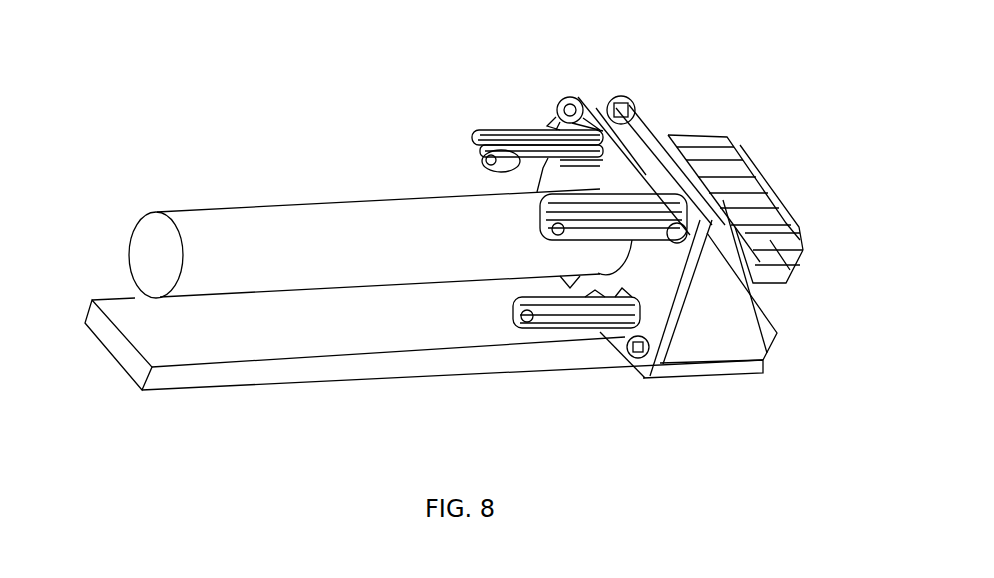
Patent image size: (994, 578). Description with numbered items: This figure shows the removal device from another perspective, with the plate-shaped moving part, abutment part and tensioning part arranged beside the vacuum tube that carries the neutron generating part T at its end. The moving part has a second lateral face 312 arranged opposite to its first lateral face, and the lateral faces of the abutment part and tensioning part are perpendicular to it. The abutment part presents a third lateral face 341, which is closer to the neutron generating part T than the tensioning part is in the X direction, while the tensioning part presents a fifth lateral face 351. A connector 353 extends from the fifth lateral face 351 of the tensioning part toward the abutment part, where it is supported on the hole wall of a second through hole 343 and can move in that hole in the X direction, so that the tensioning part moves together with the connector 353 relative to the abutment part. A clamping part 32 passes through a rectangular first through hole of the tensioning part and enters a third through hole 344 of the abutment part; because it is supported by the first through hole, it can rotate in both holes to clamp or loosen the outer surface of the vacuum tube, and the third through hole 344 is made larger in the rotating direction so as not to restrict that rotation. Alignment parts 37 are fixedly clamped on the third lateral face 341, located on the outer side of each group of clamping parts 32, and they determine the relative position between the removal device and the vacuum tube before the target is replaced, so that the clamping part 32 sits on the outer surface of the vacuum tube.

The neutron generating part T is at (155, 265).
The clamping part 32 is at (483, 174).
The alignment part 37 is at (461, 174).
The connector 353 is at (492, 87).
The second through hole 343 is at (528, 78).
The fifth lateral face 351 is at (690, 154).
The second lateral face 312 is at (741, 339).
The third through hole 344 is at (517, 372).
The third lateral face 341 is at (583, 405).